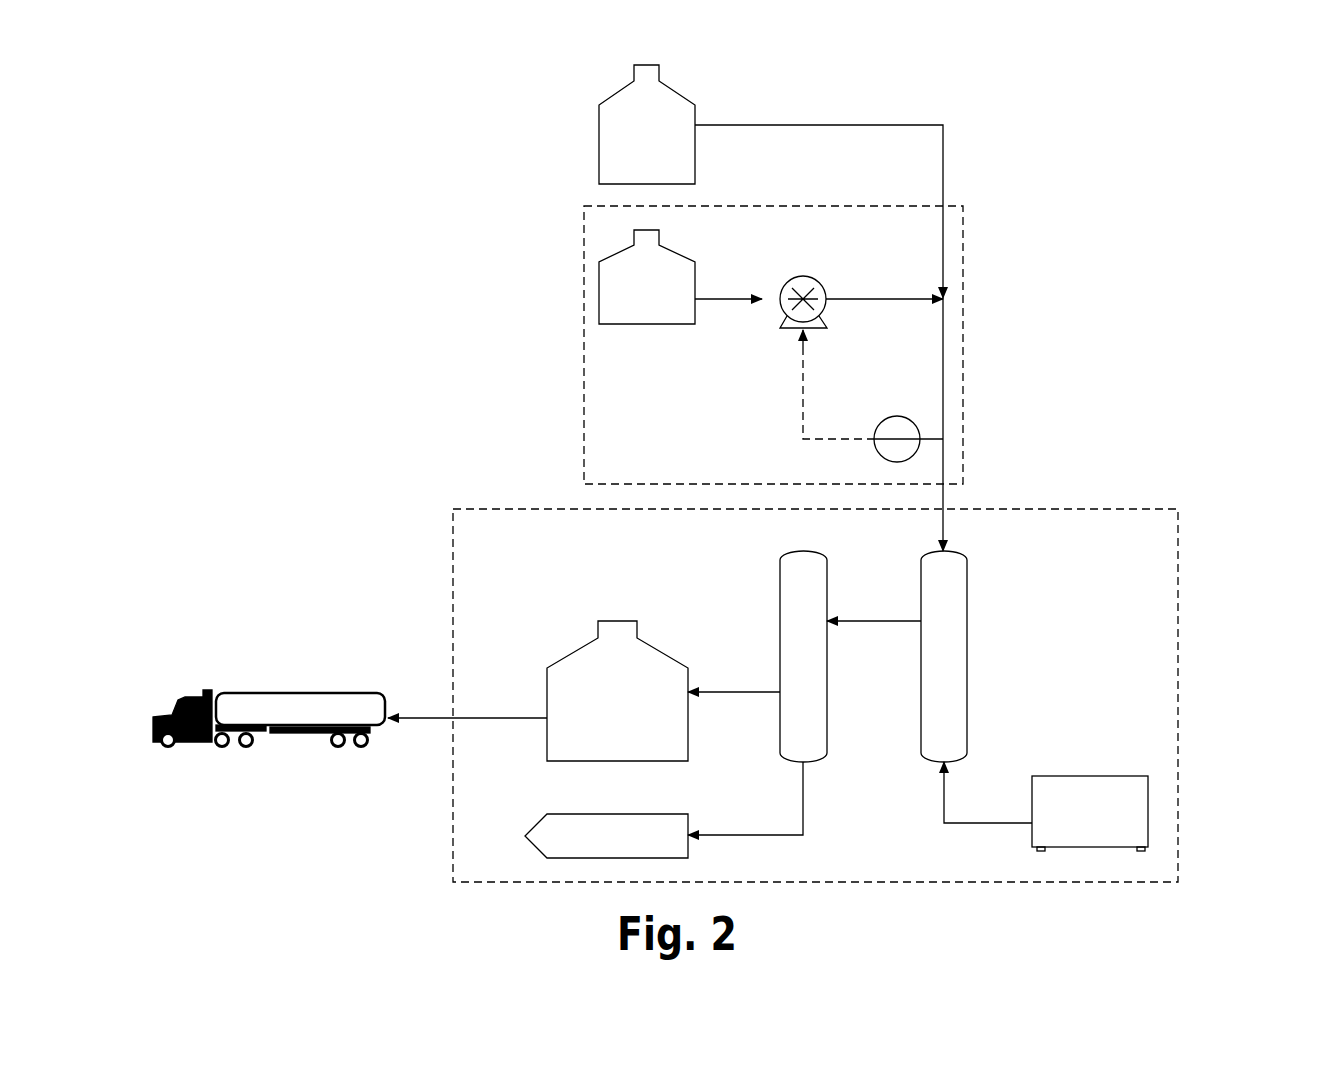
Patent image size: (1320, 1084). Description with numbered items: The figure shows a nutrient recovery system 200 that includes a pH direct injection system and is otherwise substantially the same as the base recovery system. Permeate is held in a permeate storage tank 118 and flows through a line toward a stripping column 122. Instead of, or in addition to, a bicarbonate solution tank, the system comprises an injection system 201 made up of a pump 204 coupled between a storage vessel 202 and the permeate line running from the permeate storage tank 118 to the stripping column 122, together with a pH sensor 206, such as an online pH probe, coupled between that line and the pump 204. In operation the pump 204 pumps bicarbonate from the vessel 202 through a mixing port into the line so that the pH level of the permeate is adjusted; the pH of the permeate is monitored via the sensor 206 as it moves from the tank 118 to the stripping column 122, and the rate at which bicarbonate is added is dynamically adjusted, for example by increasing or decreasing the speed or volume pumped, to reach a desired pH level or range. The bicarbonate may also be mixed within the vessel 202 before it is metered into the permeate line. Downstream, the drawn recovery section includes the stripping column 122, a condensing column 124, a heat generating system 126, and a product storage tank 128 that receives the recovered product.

The nutrient recovery system 200 is at (1174, 59).
The permeate storage tank 118 is at (677, 91).
The injection system 201 is at (963, 346).
The storage vessel 202 is at (677, 252).
The pump 204 is at (823, 283).
The pH sensor 206 is at (897, 416).
The stripping column 122 is at (967, 707).
The condensing column 124 is at (827, 707).
The heat generating system 126 is at (1090, 776).
The product storage tank 128 is at (671, 653).